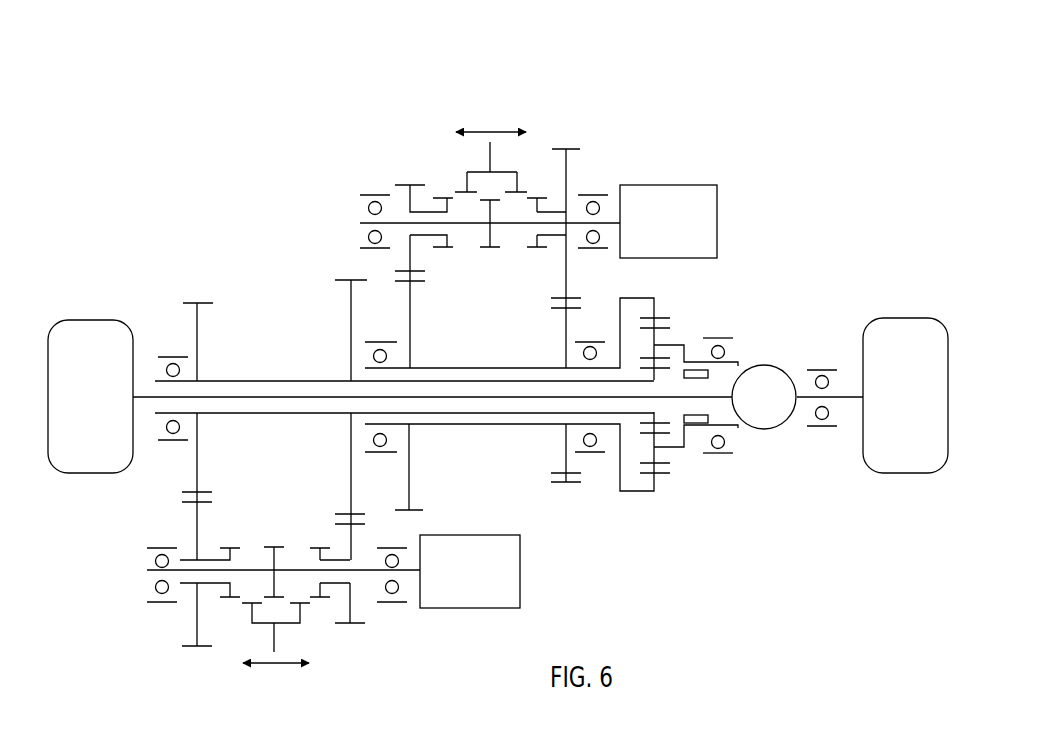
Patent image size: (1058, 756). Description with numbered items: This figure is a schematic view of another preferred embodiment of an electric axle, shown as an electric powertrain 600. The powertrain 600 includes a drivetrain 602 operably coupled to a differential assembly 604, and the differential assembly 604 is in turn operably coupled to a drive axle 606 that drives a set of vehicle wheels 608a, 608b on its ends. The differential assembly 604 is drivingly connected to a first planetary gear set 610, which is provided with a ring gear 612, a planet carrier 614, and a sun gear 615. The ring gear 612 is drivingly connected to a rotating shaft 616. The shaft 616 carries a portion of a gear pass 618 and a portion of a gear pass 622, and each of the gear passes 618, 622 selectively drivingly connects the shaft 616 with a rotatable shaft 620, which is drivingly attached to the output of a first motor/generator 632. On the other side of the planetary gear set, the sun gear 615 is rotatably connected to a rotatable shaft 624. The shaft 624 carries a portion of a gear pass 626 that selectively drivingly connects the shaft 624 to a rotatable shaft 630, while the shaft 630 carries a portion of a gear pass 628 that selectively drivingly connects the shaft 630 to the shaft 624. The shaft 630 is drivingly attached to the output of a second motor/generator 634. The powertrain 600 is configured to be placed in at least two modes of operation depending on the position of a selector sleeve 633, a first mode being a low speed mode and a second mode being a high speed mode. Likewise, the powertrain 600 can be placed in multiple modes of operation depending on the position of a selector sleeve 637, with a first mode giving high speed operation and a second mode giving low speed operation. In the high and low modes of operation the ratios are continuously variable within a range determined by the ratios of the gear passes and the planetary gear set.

The electric powertrain 600 is at (569, 256).
The drivetrain 602 is at (266, 223).
The differential assembly 604 is at (780, 408).
The drive axle 606 is at (150, 397).
The vehicle wheel 608a is at (897, 473).
The vehicle wheel 608b is at (82, 474).
The first planetary gear set 610 is at (677, 308).
The ring gear 612 is at (662, 477).
The planet carrier 614 is at (658, 453).
The sun gear 615 is at (660, 368).
The rotating shaft 616 is at (462, 363).
The gear pass 618 is at (573, 148).
The rotatable shaft 620 is at (521, 230).
The gear pass 622 is at (418, 180).
The rotatable shaft 624 is at (268, 420).
The gear pass 626 is at (198, 652).
The gear pass 628 is at (343, 630).
The rotatable shaft 630 is at (367, 572).
The first motor/generator 632 is at (684, 233).
The selector sleeve 633 is at (520, 83).
The second motor/generator 634 is at (486, 583).
The selector sleeve 637 is at (329, 660).